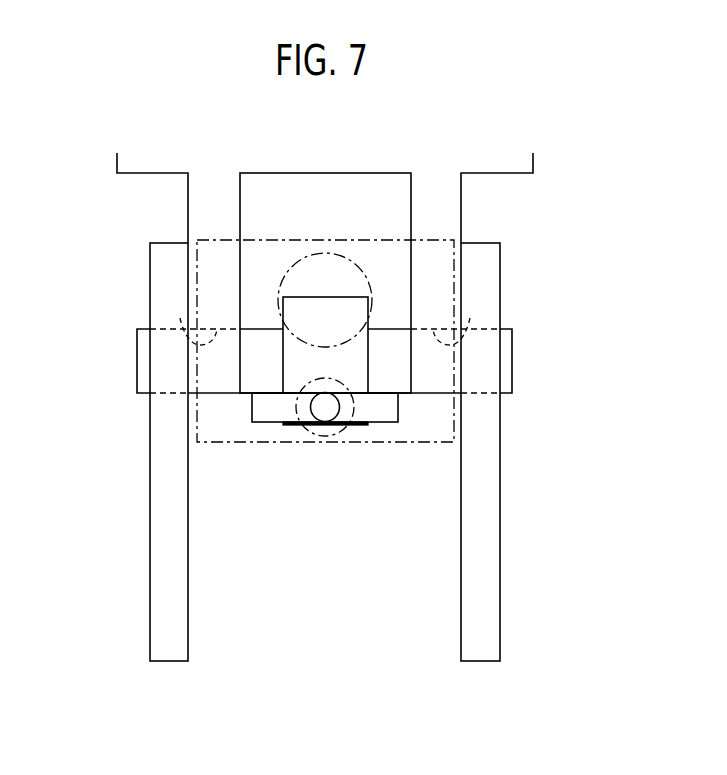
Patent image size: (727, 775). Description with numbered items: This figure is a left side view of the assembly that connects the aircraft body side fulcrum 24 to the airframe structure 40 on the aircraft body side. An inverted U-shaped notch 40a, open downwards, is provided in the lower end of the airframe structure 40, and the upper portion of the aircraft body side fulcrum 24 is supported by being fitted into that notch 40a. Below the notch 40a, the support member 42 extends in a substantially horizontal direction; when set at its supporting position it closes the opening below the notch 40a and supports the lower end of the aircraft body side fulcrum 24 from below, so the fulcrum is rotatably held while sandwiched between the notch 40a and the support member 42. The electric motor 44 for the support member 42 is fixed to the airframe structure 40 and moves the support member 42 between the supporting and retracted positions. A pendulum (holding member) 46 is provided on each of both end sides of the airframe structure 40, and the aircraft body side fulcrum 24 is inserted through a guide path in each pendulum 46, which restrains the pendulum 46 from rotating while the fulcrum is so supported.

The airframe structure 40 is at (461, 203).
The notch 40a is at (180, 318).
The aircraft body side fulcrum 24 is at (512, 357).
The electric motor for the support member 44 is at (323, 253).
The support member 42 is at (265, 422).
The pendulum (holding member) 46 is at (149, 627).